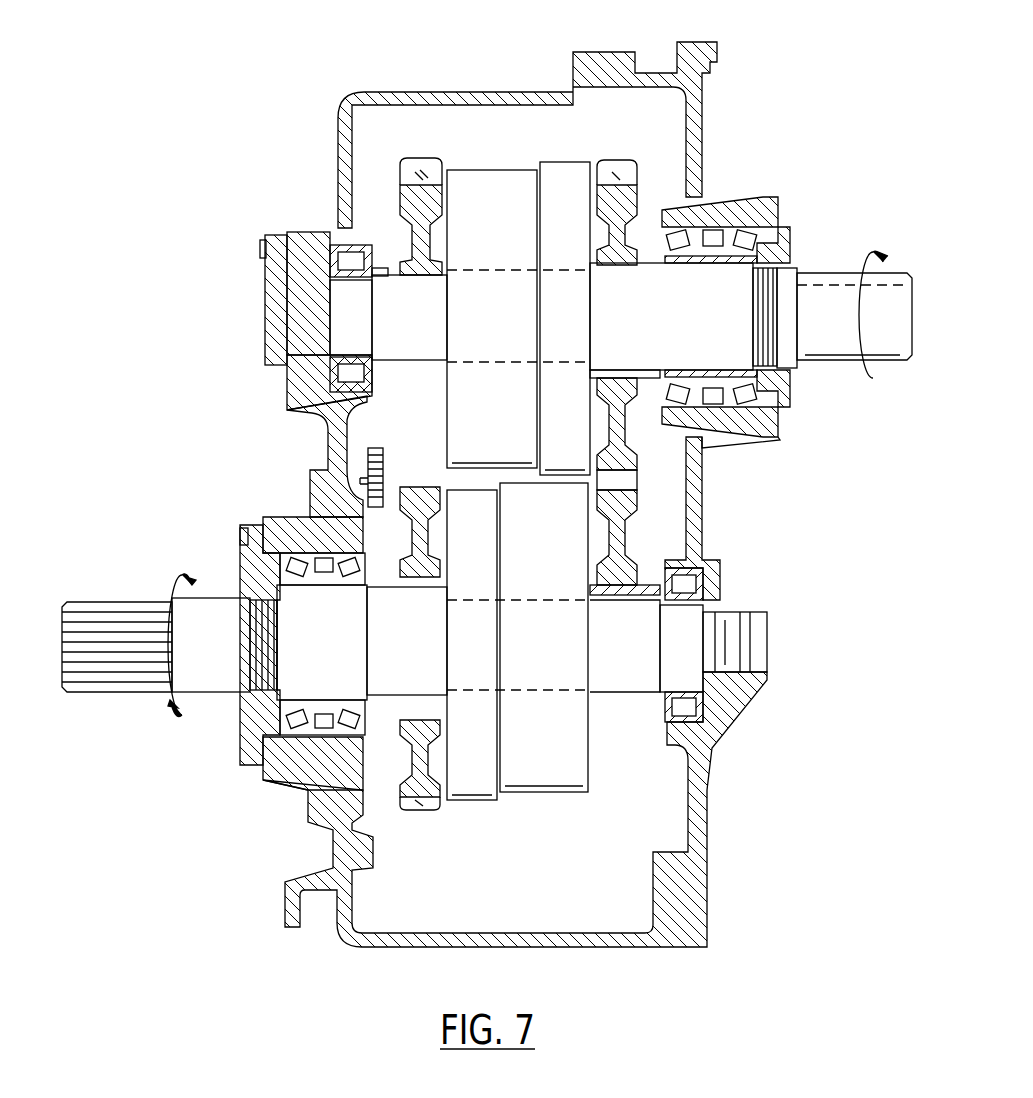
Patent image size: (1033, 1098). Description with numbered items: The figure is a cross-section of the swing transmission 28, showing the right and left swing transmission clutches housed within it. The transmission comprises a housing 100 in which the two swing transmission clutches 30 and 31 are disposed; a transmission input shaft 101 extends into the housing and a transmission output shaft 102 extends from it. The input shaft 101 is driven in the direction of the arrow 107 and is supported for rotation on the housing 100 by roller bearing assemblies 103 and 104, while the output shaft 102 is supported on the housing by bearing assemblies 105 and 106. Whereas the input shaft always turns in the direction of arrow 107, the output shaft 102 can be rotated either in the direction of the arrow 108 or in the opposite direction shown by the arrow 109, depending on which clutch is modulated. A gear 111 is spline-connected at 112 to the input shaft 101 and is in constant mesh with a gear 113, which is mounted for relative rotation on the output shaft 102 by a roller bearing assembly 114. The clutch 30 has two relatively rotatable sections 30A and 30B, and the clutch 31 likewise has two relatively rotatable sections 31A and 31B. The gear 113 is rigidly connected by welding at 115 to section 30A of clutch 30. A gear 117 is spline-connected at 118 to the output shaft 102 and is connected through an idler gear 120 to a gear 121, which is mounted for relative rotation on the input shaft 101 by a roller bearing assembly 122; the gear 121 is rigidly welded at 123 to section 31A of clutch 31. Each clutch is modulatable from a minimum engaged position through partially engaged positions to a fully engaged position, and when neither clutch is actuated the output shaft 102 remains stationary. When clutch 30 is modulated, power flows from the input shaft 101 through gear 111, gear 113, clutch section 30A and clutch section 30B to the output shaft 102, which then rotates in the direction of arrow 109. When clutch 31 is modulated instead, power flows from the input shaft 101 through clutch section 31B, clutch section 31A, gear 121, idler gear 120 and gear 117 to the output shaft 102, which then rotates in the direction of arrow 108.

The swing transmission 28 is at (511, 478).
The housing 100 is at (515, 494).
The transmission input shaft 101 is at (913, 323).
The transmission output shaft 102 is at (105, 602).
The roller bearing assembly 103 is at (728, 245).
The roller bearing assembly 104 is at (312, 238).
The bearing assembly 105 is at (688, 582).
The bearing assembly 106 is at (300, 552).
The arrow 107 is at (865, 256).
The arrow 108 is at (186, 575).
The arrow 109 is at (182, 712).
The gear 111 is at (638, 200).
The spline connection 112 is at (648, 398).
The gear 113 is at (622, 530).
The roller bearing assembly 114 is at (625, 590).
The weld 115 is at (592, 553).
The gear 117 is at (400, 536).
The spline connection 118 is at (405, 722).
The idler gear 120 is at (375, 448).
The gear 121 is at (399, 187).
The roller bearing assembly 122 is at (414, 265).
The weld 123 is at (420, 250).
The swing transmission clutch 30 is at (517, 663).
The clutch section 30A is at (554, 531).
The clutch section 30B is at (487, 531).
The swing transmission clutch 31 is at (518, 299).
The clutch section 31A is at (513, 203).
The clutch section 31B is at (583, 203).